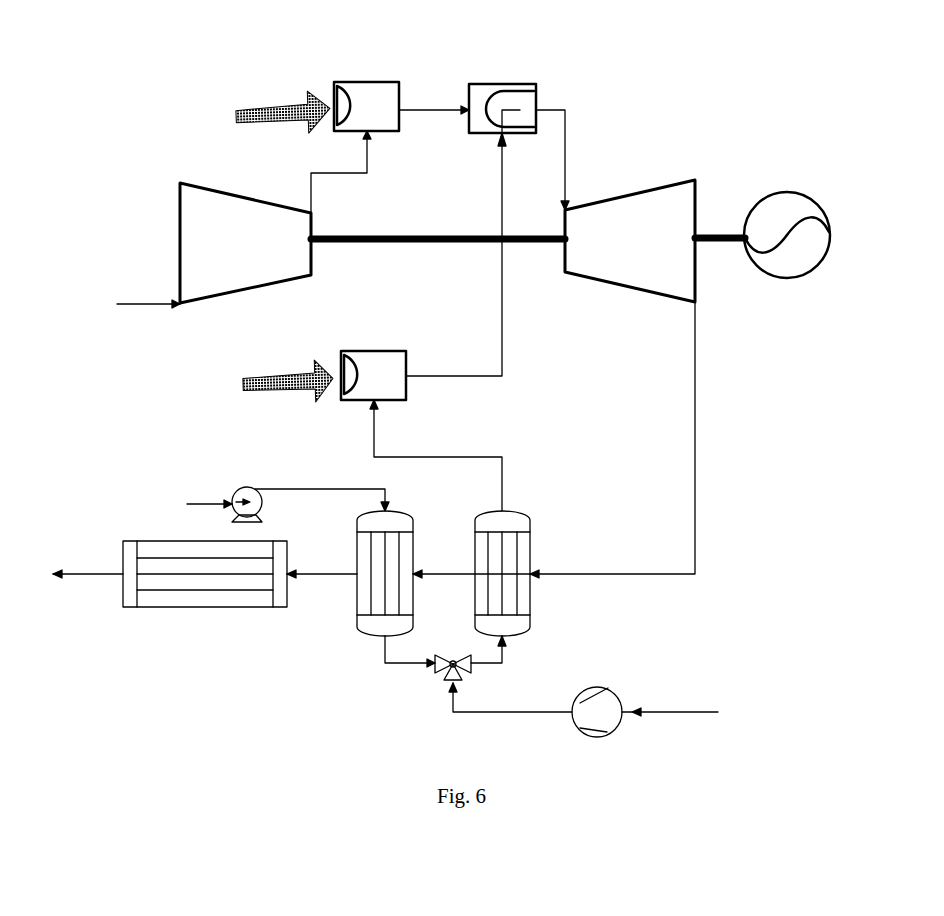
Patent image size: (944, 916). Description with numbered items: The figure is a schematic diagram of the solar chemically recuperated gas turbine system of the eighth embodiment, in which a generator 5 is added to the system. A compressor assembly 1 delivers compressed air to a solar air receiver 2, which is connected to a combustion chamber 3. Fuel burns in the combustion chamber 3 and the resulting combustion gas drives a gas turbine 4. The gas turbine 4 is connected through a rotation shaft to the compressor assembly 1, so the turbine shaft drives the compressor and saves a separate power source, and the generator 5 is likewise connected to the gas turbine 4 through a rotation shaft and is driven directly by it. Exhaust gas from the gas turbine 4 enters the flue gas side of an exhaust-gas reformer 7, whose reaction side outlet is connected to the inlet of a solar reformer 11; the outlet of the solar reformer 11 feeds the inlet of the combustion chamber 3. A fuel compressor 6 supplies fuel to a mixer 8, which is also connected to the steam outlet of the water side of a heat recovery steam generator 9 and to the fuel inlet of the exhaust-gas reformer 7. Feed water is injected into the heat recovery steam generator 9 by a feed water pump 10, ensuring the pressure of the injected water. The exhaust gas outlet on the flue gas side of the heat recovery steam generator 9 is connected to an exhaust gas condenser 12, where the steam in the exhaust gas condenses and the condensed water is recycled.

The compressor assembly 1 is at (214, 200).
The solar air receiver 2 is at (390, 110).
The combustion chamber 3 is at (487, 188).
The gas turbine 4 is at (623, 350).
The generator 5 is at (799, 194).
The fuel compressor 6 is at (645, 674).
The exhaust-gas reformer 7 is at (527, 568).
The mixer 8 is at (466, 705).
The heat recovery steam generator 9 is at (407, 598).
The feed water pump 10 is at (257, 458).
The solar reformer 11 is at (421, 389).
The exhaust gas condenser 12 is at (205, 606).